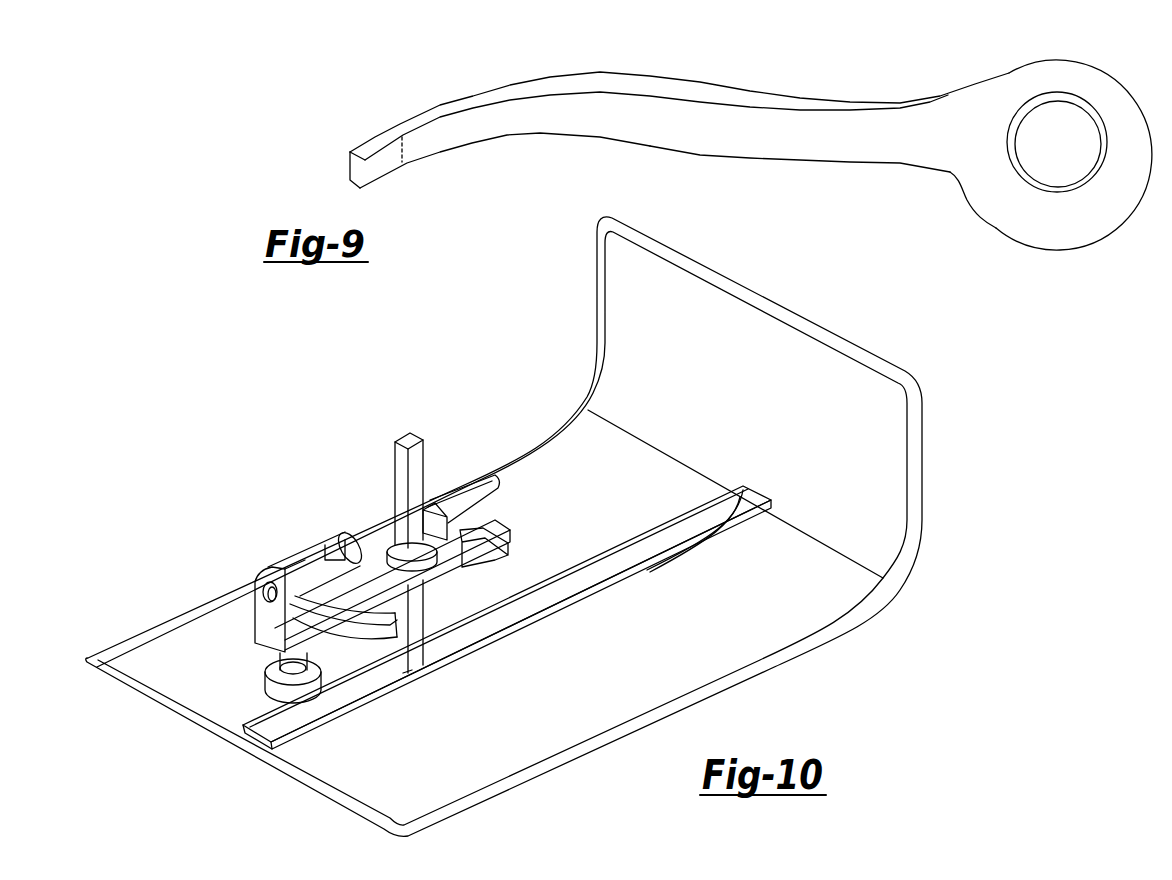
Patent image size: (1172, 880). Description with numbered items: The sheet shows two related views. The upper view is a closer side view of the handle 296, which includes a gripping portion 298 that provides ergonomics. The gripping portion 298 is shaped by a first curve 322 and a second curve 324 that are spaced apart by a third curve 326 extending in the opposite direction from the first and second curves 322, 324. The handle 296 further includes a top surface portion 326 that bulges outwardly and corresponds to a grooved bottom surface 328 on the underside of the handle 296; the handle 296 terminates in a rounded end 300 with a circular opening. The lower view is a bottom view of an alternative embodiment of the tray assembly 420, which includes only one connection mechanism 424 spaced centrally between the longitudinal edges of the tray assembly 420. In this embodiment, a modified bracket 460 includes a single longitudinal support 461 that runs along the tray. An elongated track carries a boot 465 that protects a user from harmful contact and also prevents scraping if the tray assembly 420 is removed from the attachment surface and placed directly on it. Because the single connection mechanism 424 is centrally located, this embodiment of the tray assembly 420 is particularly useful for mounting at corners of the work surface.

In FIG. 9, the handle 296 is at (393, 93).
In FIG. 9, the gripping portion 298 is at (692, 90).
In FIG. 9, the ring end 300 is at (1097, 70).
In FIG. 9, the first curve 322 is at (937, 180).
In FIG. 9, the second curve 324 is at (472, 145).
In FIG. 9, the top surface portion 326 is at (612, 78).
In FIG. 9, the grooved bottom surface 328 is at (700, 155).
In FIG. 10, the tray assembly 420 is at (968, 479).
In FIG. 10, the connection mechanism 424 is at (503, 518).
In FIG. 10, the bracket 460 is at (516, 604).
In FIG. 10, the longitudinal support 461 is at (643, 550).
In FIG. 10, the boot 465 is at (394, 440).